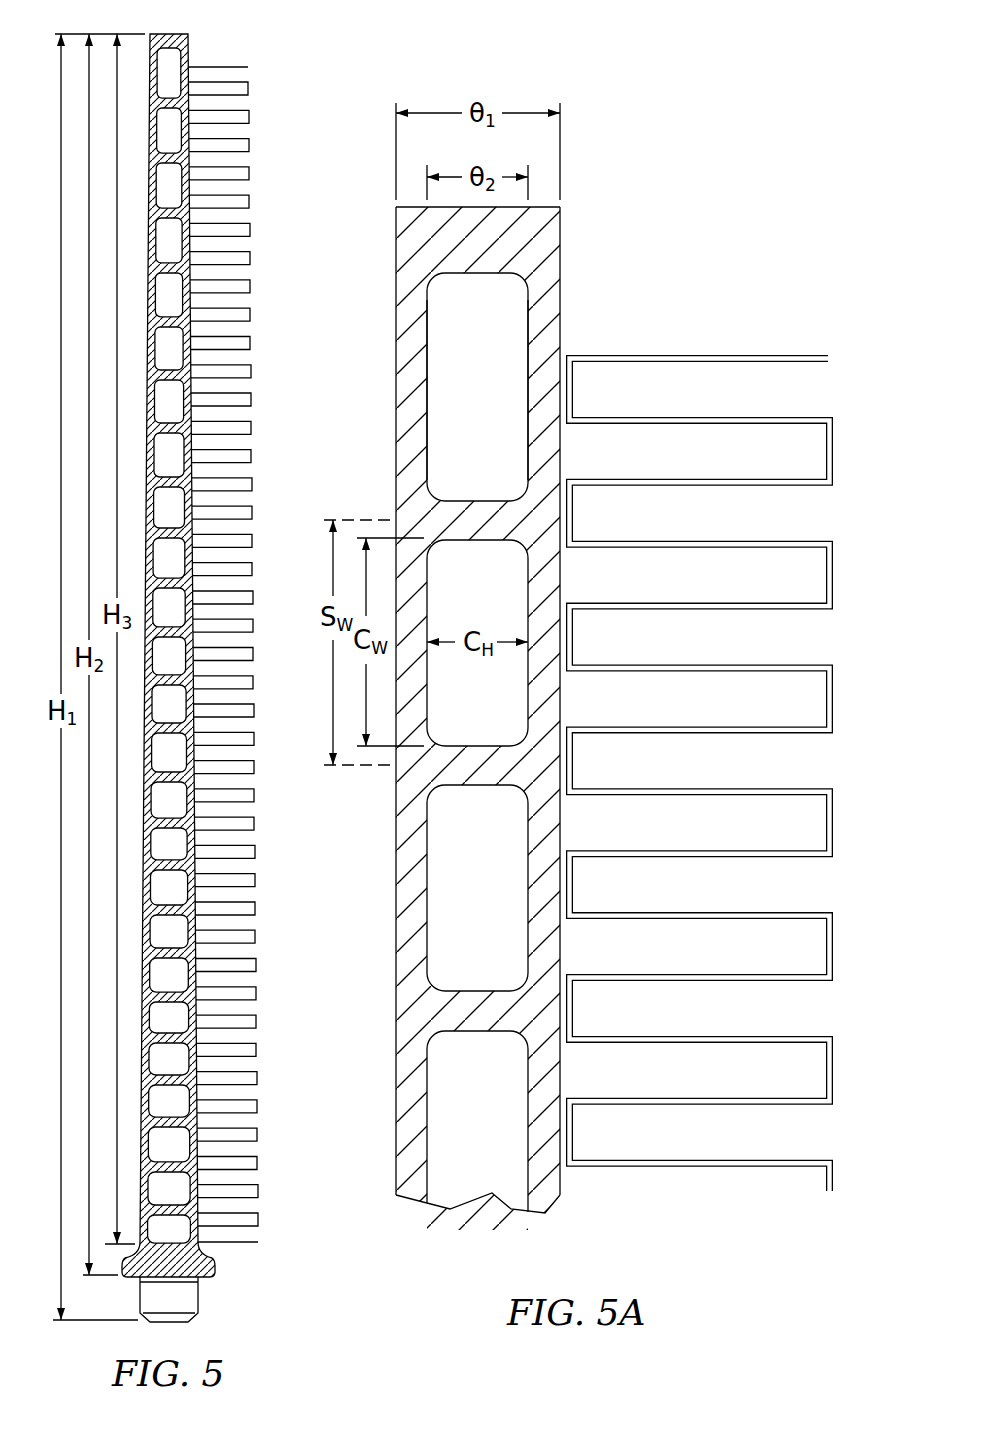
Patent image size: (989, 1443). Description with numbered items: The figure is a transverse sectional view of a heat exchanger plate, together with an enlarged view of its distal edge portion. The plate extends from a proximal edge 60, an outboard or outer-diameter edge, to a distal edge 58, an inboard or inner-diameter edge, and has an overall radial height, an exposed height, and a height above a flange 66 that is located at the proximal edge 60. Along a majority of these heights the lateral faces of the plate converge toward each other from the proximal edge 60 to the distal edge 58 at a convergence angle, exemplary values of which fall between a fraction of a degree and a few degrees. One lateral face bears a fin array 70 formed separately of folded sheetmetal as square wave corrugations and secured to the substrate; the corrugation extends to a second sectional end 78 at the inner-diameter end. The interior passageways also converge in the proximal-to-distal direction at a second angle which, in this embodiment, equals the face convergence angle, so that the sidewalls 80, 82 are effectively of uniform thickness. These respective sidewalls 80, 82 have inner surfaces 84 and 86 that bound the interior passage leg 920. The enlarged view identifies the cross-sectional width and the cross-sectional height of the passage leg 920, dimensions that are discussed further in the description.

In FIG. 5, the distal edge 58 is at (168, 34).
In FIG. 5, the fin arrays 70 is at (265, 107).
In FIG. 5, the flange 66 is at (226, 1265).
In FIG. 5, the proximal edge 60 is at (208, 1277).
In FIG. 5A, the second sectional end 78 is at (830, 358).
In FIG. 5A, the sidewall 80 is at (413, 318).
In FIG. 5A, the sidewall 82 is at (560, 313).
In FIG. 5A, the inner surface 84 is at (431, 436).
In FIG. 5A, the inner surface 86 is at (527, 389).
In FIG. 5A, the passage leg 920 is at (502, 466).